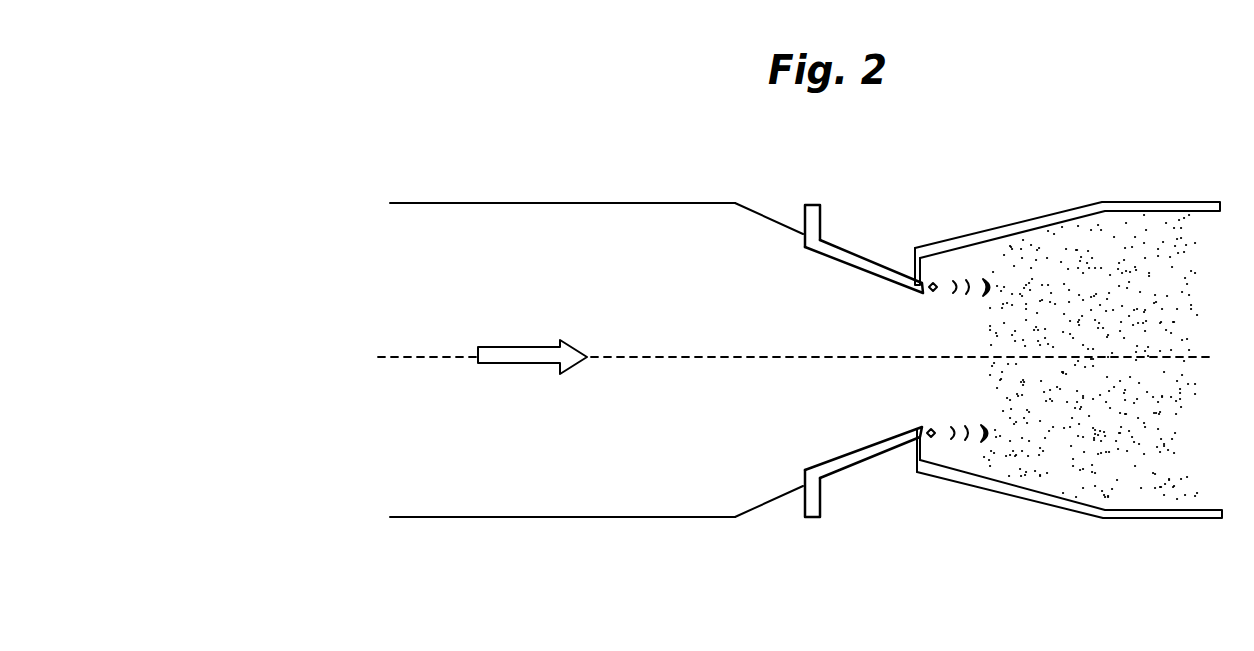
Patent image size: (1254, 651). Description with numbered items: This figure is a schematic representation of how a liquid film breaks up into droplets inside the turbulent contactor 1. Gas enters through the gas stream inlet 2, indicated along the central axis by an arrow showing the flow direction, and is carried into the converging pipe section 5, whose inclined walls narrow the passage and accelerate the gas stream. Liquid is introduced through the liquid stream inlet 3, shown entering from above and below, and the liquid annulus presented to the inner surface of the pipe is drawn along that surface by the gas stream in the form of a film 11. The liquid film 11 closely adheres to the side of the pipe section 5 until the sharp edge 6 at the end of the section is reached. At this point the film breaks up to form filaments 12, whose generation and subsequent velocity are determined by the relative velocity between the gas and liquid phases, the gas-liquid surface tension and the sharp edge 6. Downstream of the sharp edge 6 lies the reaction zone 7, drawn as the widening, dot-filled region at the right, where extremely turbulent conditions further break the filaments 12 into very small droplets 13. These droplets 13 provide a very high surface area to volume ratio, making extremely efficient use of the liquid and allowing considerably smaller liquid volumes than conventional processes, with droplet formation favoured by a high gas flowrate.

The contactor 1 is at (570, 553).
The gas stream inlet 2 is at (785, 357).
The liquid stream inlet 3 is at (815, 180).
The converging pipe section 5 is at (773, 500).
The sharp edge 6 is at (923, 436).
The reaction zone 7 is at (980, 335).
The liquid film 11 is at (856, 254).
The filaments 12 is at (954, 288).
The droplets 13 is at (1112, 477).